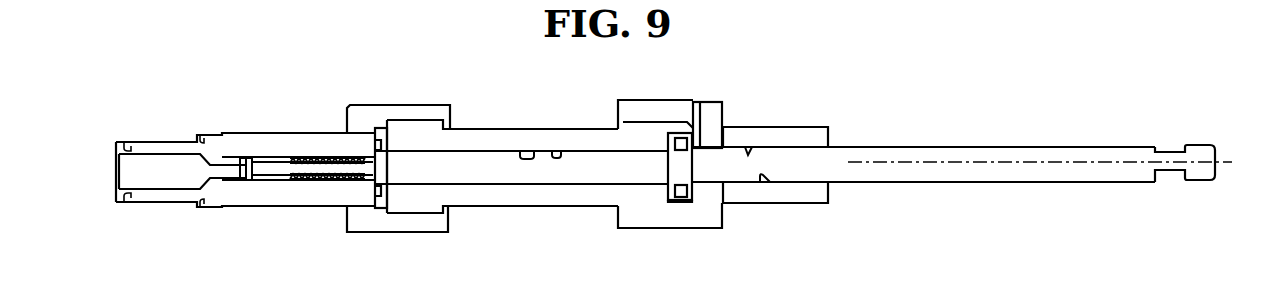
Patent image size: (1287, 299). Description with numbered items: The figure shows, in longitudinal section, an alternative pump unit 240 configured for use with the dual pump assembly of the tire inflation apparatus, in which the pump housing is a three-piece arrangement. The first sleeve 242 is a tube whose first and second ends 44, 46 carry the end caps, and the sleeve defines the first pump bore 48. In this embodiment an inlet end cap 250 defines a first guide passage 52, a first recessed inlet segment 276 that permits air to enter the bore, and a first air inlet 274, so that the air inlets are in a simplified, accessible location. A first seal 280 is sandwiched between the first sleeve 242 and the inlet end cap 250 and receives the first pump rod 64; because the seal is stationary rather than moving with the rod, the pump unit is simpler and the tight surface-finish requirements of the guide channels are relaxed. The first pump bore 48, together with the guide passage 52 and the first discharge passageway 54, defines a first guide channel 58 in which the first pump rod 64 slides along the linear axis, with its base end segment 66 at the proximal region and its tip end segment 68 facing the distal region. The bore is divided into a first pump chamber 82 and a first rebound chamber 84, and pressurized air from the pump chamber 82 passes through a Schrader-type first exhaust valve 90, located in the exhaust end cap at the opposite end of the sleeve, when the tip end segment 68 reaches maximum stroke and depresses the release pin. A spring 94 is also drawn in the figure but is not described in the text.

The pump unit 240 is at (404, 80).
The first sleeve 242 is at (483, 129).
The inlet end cap 250 is at (363, 105).
The second end of the first sleeve 46 is at (370, 135).
The first pump bore 48 is at (535, 153).
The first guide channel 58 is at (558, 155).
The first pump chamber 82 is at (597, 173).
The first discharge passageway 54 is at (273, 176).
The spring 94 is at (305, 174).
The first exhaust valve 90 is at (327, 173).
The tip end segment 68 is at (670, 162).
The first seal 280 is at (692, 194).
The first air inlet 274 is at (713, 106).
The first end of the first sleeve 44 is at (694, 128).
The first rebound chamber 84 is at (751, 153).
The first guide passage 52 is at (764, 178).
The first recessed inlet segment 276 is at (724, 188).
The first pump rod 64 is at (905, 177).
The base end segment 66 is at (1177, 171).